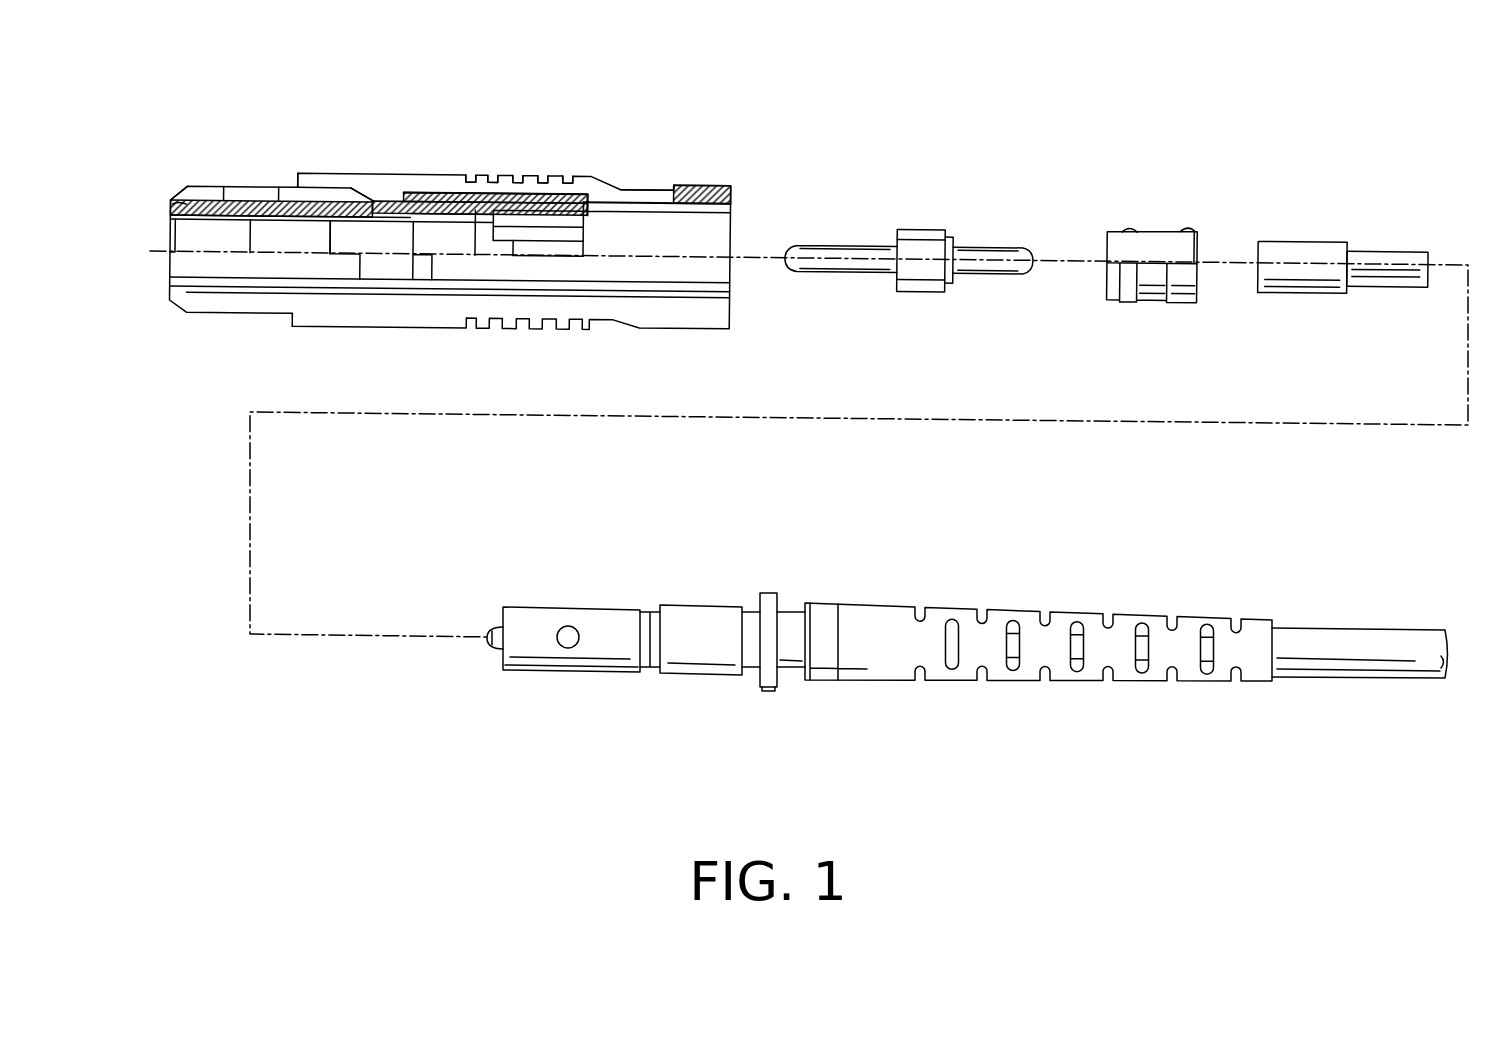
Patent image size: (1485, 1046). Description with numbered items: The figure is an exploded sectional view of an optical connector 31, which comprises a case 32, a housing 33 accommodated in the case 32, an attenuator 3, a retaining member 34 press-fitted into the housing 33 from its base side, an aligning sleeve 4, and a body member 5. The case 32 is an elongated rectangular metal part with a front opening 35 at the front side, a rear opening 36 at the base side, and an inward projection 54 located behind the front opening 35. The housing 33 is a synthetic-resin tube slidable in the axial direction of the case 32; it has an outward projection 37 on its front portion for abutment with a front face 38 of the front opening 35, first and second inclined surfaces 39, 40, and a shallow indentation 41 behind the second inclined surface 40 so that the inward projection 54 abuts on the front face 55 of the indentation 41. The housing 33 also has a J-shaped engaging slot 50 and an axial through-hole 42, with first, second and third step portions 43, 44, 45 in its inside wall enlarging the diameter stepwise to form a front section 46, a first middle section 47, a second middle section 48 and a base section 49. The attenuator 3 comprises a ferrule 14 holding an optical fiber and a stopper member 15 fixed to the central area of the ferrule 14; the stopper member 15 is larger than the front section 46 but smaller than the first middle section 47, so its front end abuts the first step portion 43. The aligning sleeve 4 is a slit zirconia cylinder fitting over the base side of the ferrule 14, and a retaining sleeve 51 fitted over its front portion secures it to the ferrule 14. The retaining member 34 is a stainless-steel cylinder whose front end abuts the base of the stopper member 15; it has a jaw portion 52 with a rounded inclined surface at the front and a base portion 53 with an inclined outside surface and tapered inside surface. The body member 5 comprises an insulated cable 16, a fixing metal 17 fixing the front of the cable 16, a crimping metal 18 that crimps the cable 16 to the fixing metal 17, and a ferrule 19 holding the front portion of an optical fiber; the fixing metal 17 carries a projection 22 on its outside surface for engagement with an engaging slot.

The attenuator 3 is at (909, 219).
The aligning sleeve 4 is at (1392, 235).
The body member 5 is at (960, 639).
The ferrule 14 is at (850, 248).
The stopper member 15 is at (912, 232).
The insulated cable 16 is at (1353, 638).
The fixing metal 17 is at (612, 607).
The crimping metal 18 is at (705, 610).
The ferrule 19 is at (495, 650).
The projection 22 is at (568, 648).
The optical connector 31 is at (802, 130).
The case 32 is at (365, 173).
The housing 33 is at (570, 193).
The retaining member 34 is at (1165, 216).
The front opening 35 is at (247, 193).
The rear opening 36 is at (658, 187).
The outward projection 37 is at (222, 186).
The front face 38 is at (182, 187).
The first inclined surface 39 is at (278, 186).
The second inclined surface 40 is at (345, 185).
The shallow indentation 41 is at (443, 188).
The through-hole 42 is at (720, 221).
The first step portion 43 is at (250, 221).
The second step portion 44 is at (330, 218).
The third step portion 45 is at (493, 209).
The front section 46 is at (203, 237).
The first middle section 47 is at (298, 236).
The second middle section 48 is at (447, 237).
The base section 49 is at (545, 236).
The J-shaped engaging slot 50 is at (530, 189).
The retaining sleeve 51 is at (1313, 236).
The jaw portion 52 is at (1130, 213).
The base portion 53 is at (1195, 216).
The inward projection 54 is at (413, 240).
The front face 55 is at (407, 192).